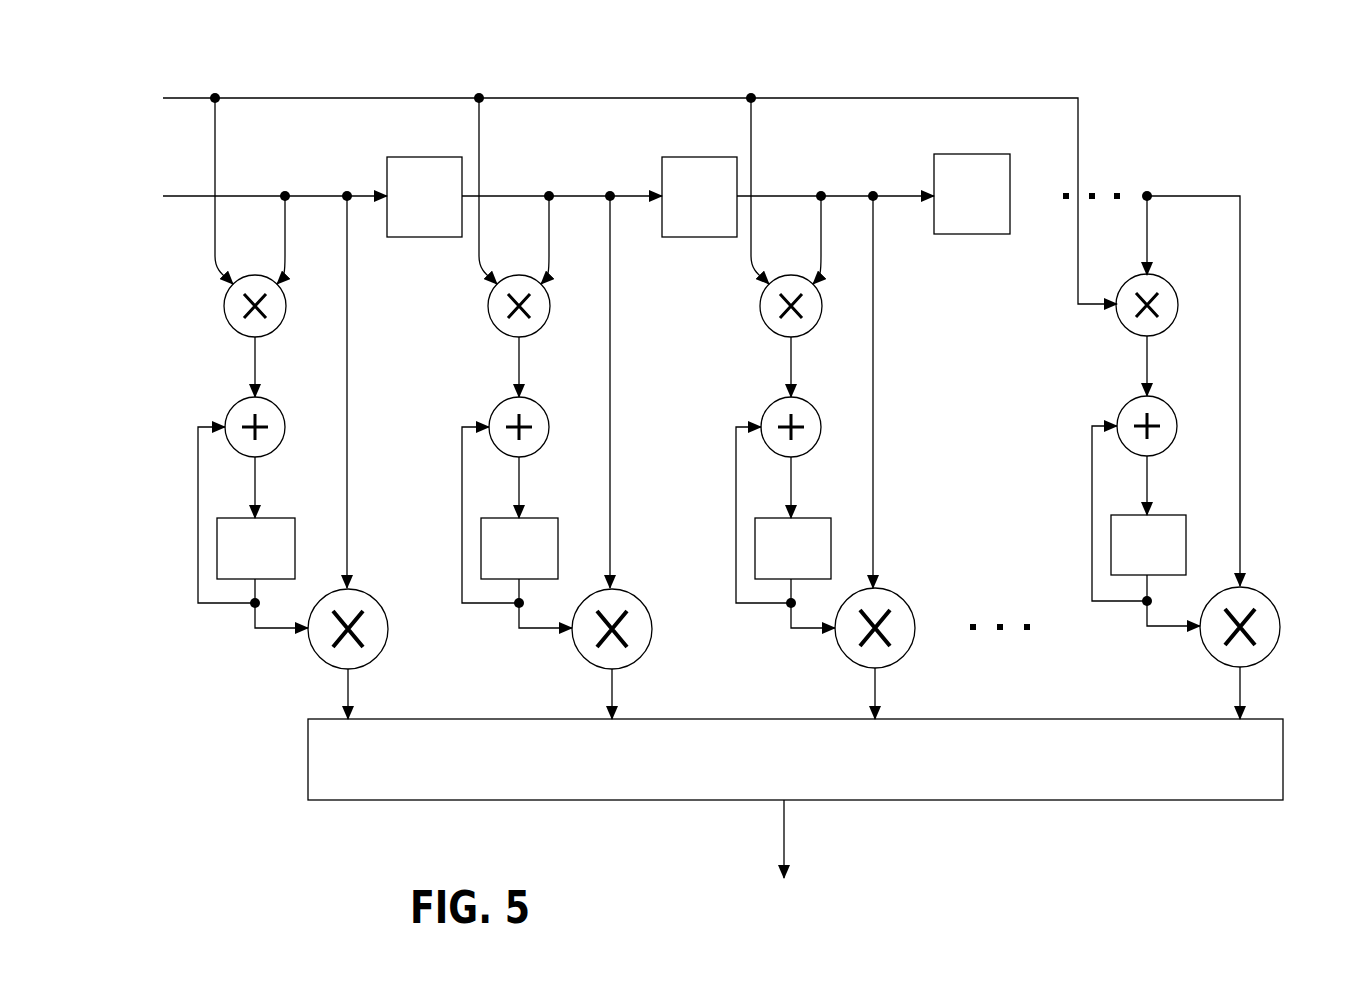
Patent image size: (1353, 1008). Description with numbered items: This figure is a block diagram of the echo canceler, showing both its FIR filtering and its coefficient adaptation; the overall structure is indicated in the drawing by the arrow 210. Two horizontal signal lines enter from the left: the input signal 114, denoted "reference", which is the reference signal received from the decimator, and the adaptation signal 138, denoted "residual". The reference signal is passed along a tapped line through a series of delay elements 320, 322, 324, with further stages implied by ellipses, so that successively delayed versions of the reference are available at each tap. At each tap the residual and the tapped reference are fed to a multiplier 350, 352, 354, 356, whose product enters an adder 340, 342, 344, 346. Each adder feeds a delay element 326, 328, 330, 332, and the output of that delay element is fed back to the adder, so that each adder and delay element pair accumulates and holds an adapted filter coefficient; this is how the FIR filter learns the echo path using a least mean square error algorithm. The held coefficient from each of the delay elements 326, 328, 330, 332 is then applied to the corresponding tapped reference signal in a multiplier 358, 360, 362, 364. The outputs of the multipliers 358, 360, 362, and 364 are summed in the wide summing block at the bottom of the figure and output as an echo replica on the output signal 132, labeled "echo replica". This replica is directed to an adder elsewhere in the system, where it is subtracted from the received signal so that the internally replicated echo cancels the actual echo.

The input signal 114 is at (208, 195).
The adaptation signal 138 is at (415, 98).
The adaptive echo canceller filter 210 is at (778, 80).
The delay element 320 is at (397, 157).
The delay element 322 is at (672, 157).
The delay element 324 is at (945, 154).
The multiplier 350 is at (286, 307).
The multiplier 352 is at (550, 307).
The multiplier 354 is at (822, 305).
The multiplier 356 is at (1157, 276).
The adder 340 is at (286, 428).
The adder 342 is at (549, 428).
The adder 344 is at (805, 400).
The adder 346 is at (1160, 398).
The delay element 326 is at (295, 548).
The delay element 328 is at (558, 548).
The delay element 330 is at (800, 518).
The delay element 332 is at (1163, 515).
The multiplier 358 is at (388, 630).
The multiplier 360 is at (652, 630).
The multiplier 362 is at (915, 628).
The multiplier 364 is at (1280, 628).
The output signal 132 is at (784, 813).